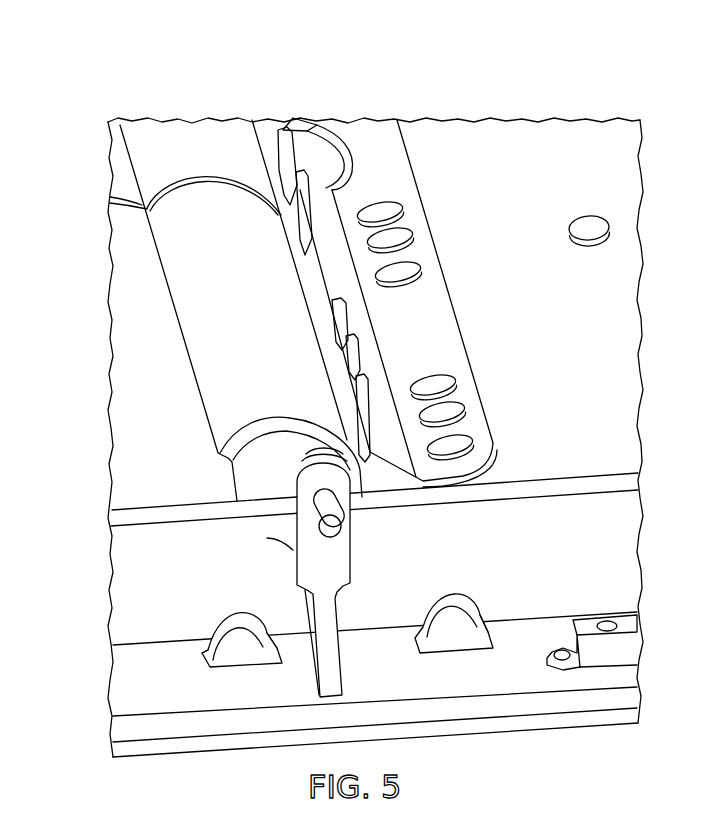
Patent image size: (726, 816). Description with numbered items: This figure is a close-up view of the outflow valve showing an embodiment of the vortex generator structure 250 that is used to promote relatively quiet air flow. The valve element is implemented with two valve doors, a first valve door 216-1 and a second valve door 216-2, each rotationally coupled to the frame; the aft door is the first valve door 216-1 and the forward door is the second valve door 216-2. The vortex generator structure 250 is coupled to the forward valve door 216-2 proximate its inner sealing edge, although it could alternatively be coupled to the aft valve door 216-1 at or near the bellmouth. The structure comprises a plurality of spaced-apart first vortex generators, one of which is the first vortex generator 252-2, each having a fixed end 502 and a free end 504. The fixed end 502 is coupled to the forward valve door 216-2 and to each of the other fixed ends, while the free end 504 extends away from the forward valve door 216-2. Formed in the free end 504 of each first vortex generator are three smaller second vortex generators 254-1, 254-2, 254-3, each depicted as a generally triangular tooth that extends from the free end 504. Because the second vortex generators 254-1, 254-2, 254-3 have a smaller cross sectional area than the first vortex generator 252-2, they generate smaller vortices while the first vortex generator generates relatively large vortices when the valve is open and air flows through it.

The vortex generator structure 250 is at (325, 105).
The first vortex generator 252-2 is at (330, 200).
The second vortex generator 254-1 is at (355, 402).
The second vortex generator 254-2 is at (343, 363).
The second vortex generator 254-3 is at (330, 321).
The fixed end 502 is at (486, 337).
The free end 504 is at (318, 329).
The first valve door 216-1 is at (118, 414).
The second valve door 216-2 is at (616, 407).